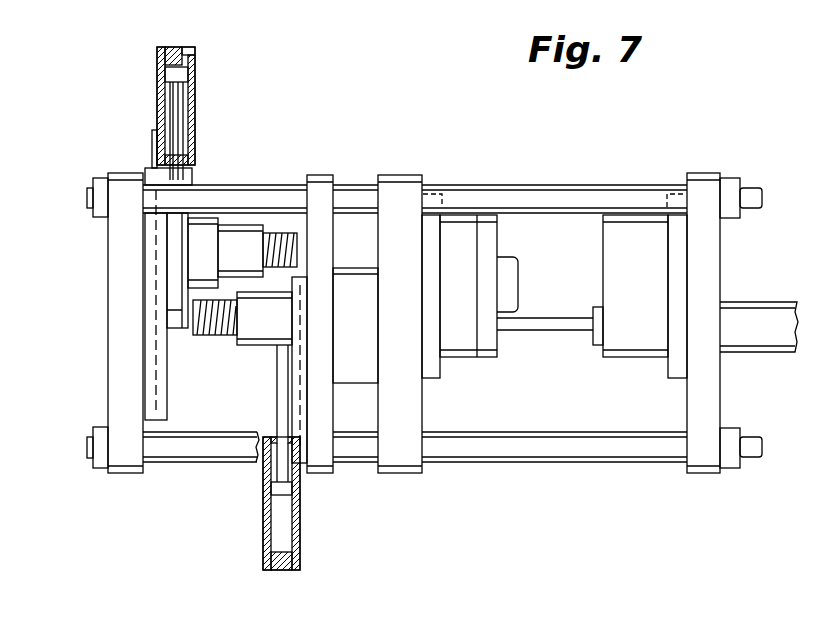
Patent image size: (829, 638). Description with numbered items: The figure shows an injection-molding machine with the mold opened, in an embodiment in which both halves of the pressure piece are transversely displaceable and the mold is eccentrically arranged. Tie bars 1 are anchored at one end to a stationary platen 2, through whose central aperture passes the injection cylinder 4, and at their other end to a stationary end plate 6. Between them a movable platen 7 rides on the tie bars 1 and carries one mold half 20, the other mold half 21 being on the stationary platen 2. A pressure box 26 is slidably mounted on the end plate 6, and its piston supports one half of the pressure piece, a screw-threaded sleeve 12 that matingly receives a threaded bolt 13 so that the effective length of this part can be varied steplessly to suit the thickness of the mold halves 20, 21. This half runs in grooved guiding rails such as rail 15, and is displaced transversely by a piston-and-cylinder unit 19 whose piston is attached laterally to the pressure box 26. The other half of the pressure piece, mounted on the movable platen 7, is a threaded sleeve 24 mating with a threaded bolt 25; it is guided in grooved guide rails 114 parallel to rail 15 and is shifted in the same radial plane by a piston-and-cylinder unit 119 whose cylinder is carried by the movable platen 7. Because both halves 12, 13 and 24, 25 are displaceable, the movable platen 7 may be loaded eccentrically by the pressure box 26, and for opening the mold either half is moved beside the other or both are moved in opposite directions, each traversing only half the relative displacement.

The tie bars 1 is at (545, 197).
The stationary platen 2 is at (710, 188).
The injection cylinder 4 is at (786, 320).
The end plate 6 is at (125, 190).
The movable platen 7 is at (322, 190).
The second part of the pressure piece 12 is at (232, 243).
The threaded bolt 13 is at (287, 238).
The grooved guiding rail 15 is at (153, 262).
The piston-and-cylinder unit 19 is at (190, 102).
The mold half 20 is at (460, 245).
The mold half 21 is at (643, 243).
The threaded sleeve 24 is at (252, 322).
The threaded bolt 25 is at (198, 335).
The pressure box 26 is at (182, 303).
The grooved guide rail 114 is at (300, 385).
The piston-and-cylinder unit 119 is at (262, 523).